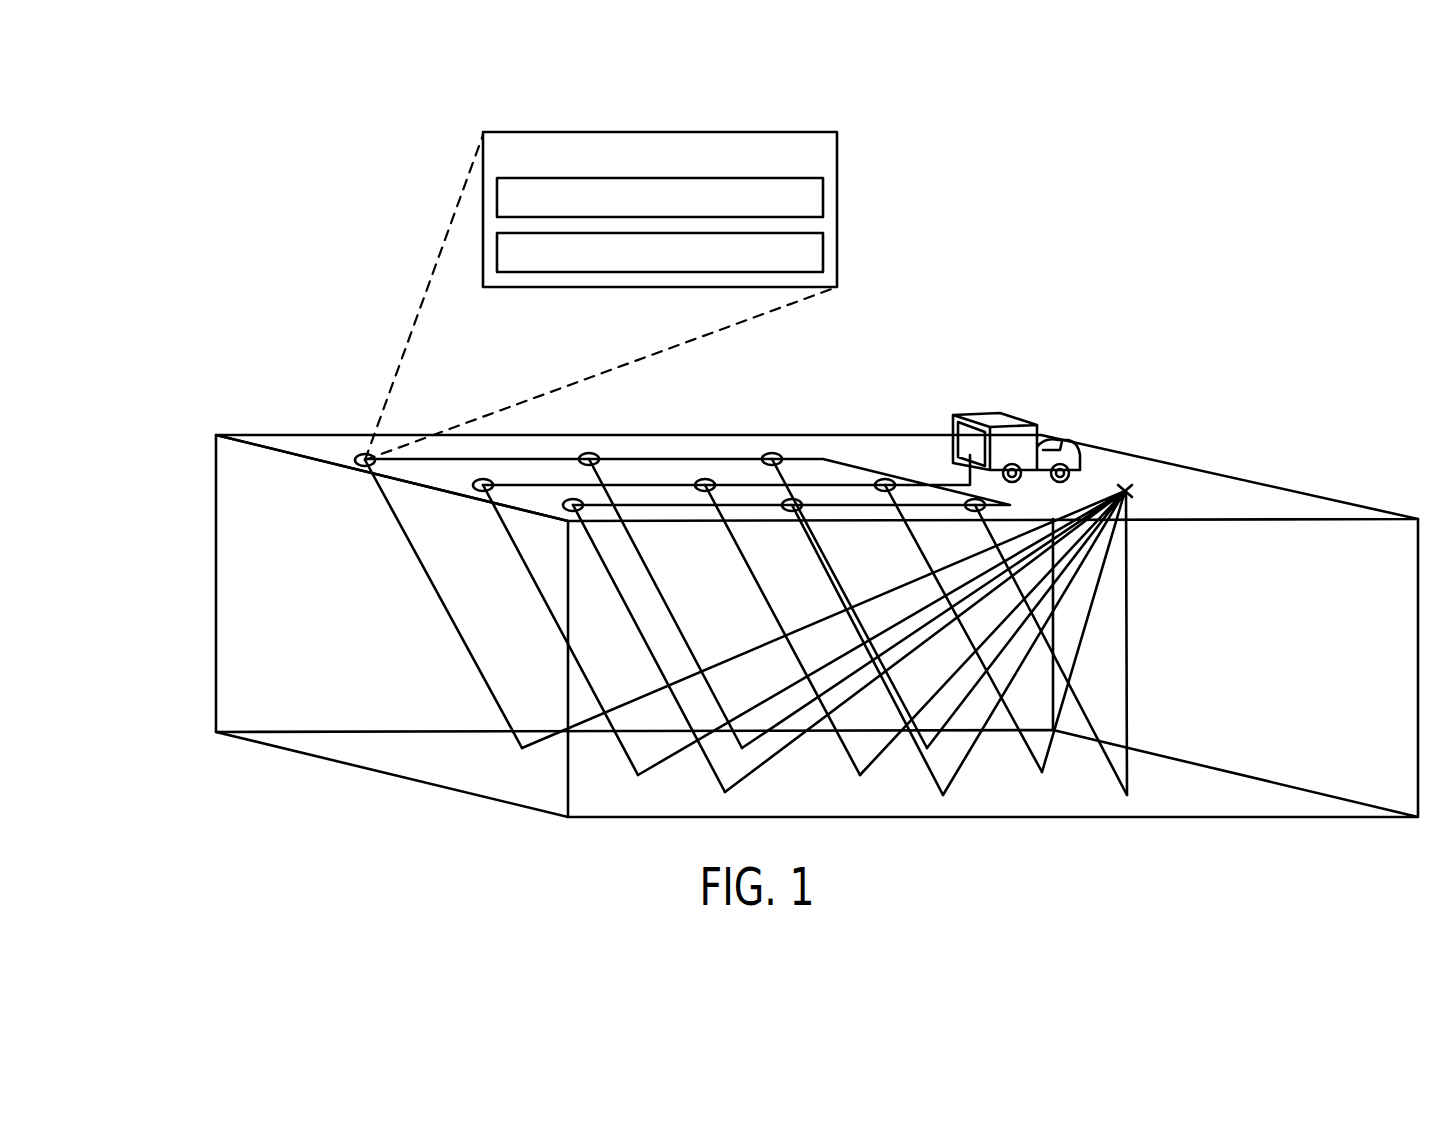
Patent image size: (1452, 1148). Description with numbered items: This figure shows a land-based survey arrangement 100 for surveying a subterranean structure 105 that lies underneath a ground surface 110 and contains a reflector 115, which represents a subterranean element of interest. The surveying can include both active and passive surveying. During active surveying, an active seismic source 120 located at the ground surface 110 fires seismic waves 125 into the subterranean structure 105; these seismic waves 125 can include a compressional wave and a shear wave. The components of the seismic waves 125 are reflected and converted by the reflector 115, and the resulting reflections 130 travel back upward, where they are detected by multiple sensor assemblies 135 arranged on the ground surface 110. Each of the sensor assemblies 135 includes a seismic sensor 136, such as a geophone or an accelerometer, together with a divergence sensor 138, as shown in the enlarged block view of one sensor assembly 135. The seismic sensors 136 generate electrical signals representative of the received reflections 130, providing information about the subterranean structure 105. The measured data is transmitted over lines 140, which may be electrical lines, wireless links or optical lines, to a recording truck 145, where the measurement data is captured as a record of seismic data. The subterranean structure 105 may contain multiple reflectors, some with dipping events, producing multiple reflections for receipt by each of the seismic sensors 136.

The land-based survey arrangement 100 is at (392, 300).
The subterranean structure 105 is at (216, 588).
The ground surface 110 is at (1299, 506).
The reflector 115 is at (527, 792).
The active seismic source 120 is at (1125, 487).
The seismic waves 125 is at (1150, 607).
The reflections 130 is at (480, 665).
The sensor assemblies 135 is at (656, 297).
The seismic sensor 136 is at (823, 195).
The divergence sensor 138 is at (823, 250).
The lines 140 is at (682, 458).
The recording truck 145 is at (978, 413).